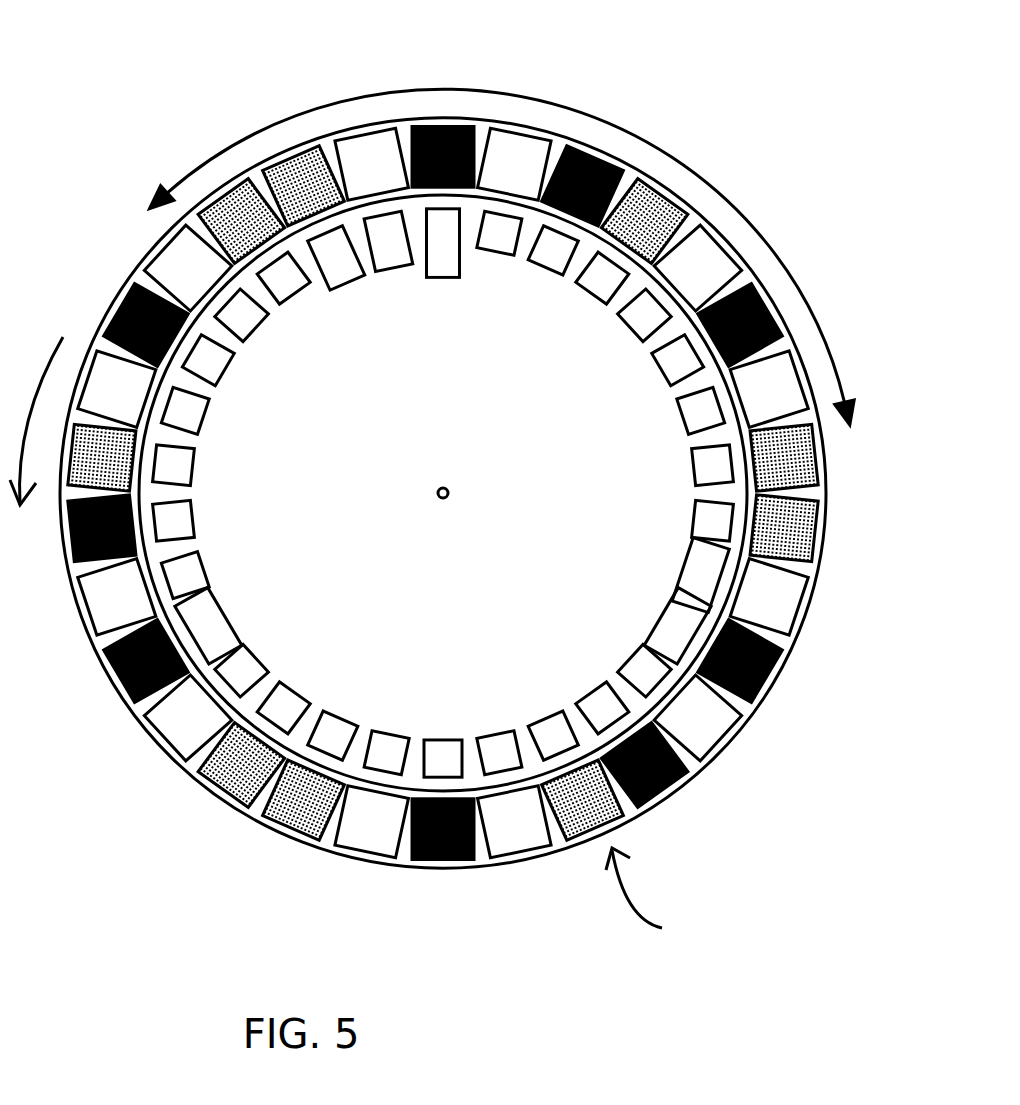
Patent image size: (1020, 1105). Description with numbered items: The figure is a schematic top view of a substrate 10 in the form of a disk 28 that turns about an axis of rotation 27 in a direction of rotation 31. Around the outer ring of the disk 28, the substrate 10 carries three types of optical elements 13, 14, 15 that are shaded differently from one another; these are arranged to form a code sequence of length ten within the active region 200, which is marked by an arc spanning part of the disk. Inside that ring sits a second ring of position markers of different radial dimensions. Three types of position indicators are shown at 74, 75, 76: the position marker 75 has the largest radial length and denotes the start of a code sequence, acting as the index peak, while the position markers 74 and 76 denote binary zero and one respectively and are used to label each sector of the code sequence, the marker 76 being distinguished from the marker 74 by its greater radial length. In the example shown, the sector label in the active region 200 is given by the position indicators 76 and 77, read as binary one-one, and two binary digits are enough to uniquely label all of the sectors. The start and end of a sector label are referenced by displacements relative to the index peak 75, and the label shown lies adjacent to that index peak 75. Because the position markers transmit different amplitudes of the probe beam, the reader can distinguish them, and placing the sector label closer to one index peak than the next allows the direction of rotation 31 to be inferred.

The substrate 10 is at (443, 493).
The optical element 13 is at (812, 448).
The optical element 14 is at (773, 600).
The optical element 15 is at (770, 660).
The axis of rotation 27 is at (449, 496).
The disk 28 is at (659, 895).
The direction of rotation 31 is at (42, 402).
The position marker 74 is at (512, 236).
The position marker 75 is at (445, 268).
The position marker 76 is at (392, 252).
The position indicator 77 is at (348, 270).
The active region 200 is at (586, 84).